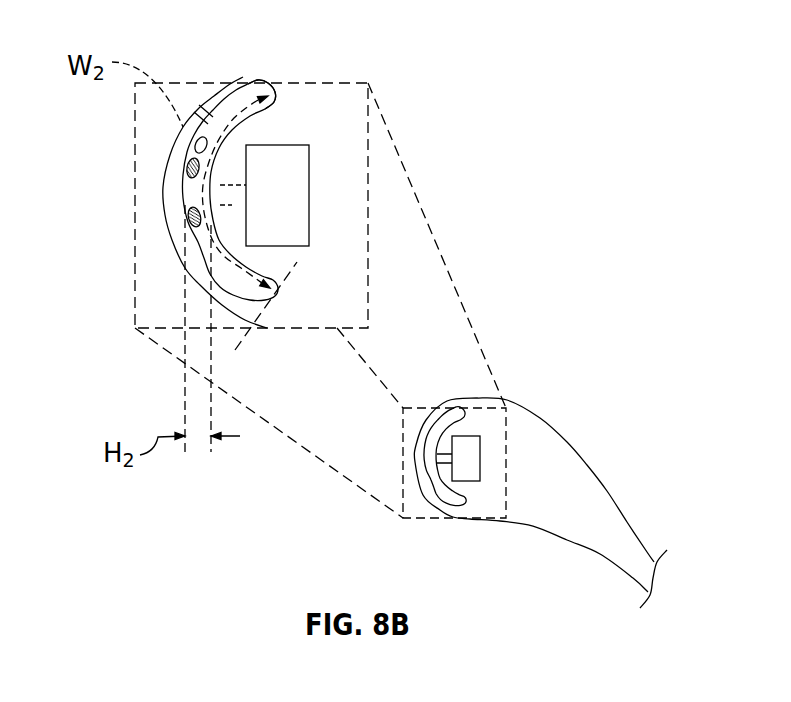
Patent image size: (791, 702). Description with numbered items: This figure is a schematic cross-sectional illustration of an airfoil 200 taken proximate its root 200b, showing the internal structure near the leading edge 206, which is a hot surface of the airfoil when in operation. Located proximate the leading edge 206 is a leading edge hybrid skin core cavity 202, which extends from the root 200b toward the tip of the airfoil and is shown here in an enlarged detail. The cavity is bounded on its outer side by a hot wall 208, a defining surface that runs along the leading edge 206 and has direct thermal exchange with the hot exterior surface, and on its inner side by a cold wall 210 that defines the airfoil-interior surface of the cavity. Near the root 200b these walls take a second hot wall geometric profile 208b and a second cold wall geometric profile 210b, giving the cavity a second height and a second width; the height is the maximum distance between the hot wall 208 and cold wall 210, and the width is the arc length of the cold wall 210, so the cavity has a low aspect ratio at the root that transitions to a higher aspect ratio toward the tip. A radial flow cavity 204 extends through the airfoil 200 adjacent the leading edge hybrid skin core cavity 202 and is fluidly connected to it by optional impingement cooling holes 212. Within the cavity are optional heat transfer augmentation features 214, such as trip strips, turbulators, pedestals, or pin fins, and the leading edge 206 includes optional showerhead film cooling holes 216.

The airfoil 200 is at (595, 496).
The root 200b is at (508, 396).
The leading edge hybrid skin core cavity 202 is at (247, 93).
The radial flow cavity 204 is at (294, 168).
The leading edge 206 is at (165, 190).
The hot wall 208 is at (185, 183).
The second hot wall geometric profile 208b is at (198, 147).
The cold wall 210 is at (287, 112).
The second cold wall geometric profile 210b is at (180, 268).
The impingement cooling holes 212 is at (234, 193).
The heat transfer augmentation features 214 is at (200, 222).
The showerhead film cooling holes 216 is at (192, 110).